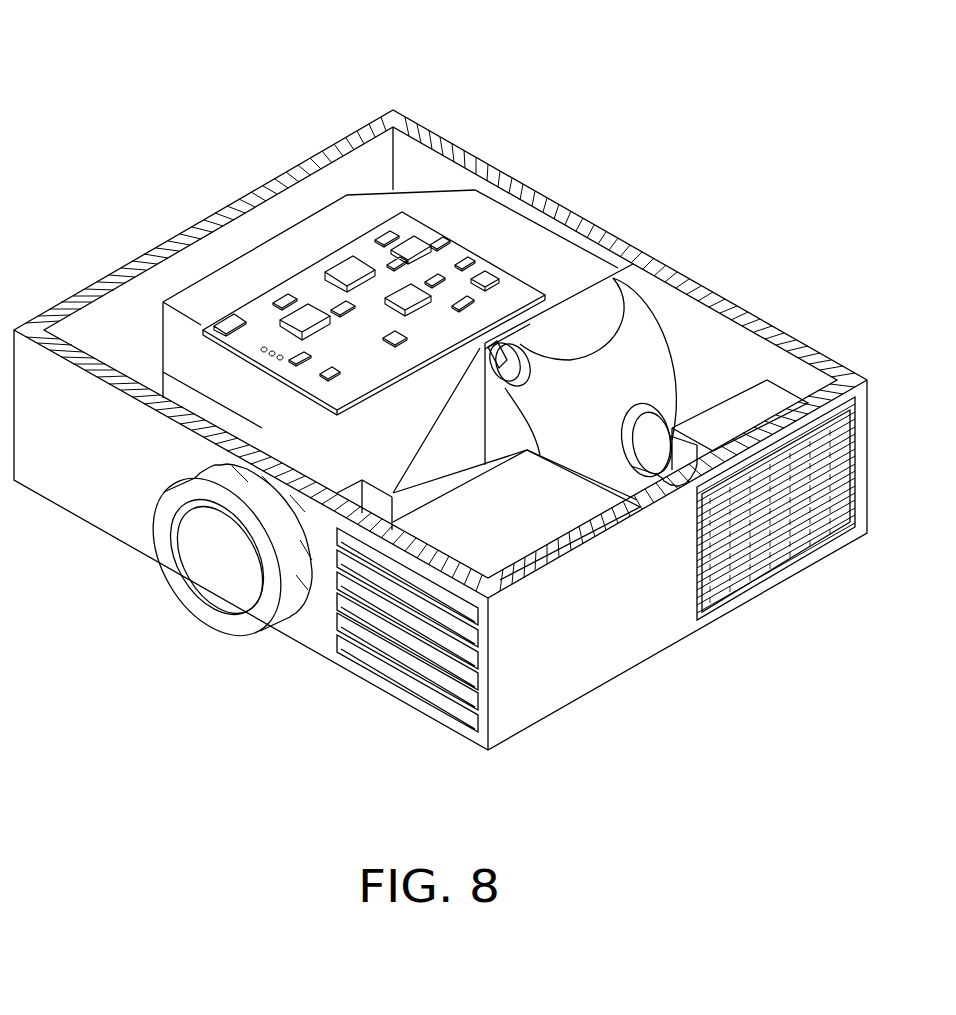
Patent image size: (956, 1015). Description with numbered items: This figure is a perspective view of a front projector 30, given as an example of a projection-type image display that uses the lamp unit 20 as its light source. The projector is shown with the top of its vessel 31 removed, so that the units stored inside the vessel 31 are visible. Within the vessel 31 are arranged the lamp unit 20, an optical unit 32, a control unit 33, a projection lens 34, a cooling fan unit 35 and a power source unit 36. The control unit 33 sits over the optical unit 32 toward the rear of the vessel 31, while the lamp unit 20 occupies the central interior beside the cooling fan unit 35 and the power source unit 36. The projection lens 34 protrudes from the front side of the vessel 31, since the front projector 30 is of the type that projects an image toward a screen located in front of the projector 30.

The front projector 30 is at (118, 73).
The vessel 31 is at (352, 127).
The optical unit 32 is at (200, 302).
The control unit 33 is at (422, 222).
The lamp unit 20 is at (612, 278).
The projection lens 34 is at (208, 572).
The cooling fan unit 35 is at (743, 382).
The power source unit 36 is at (533, 535).